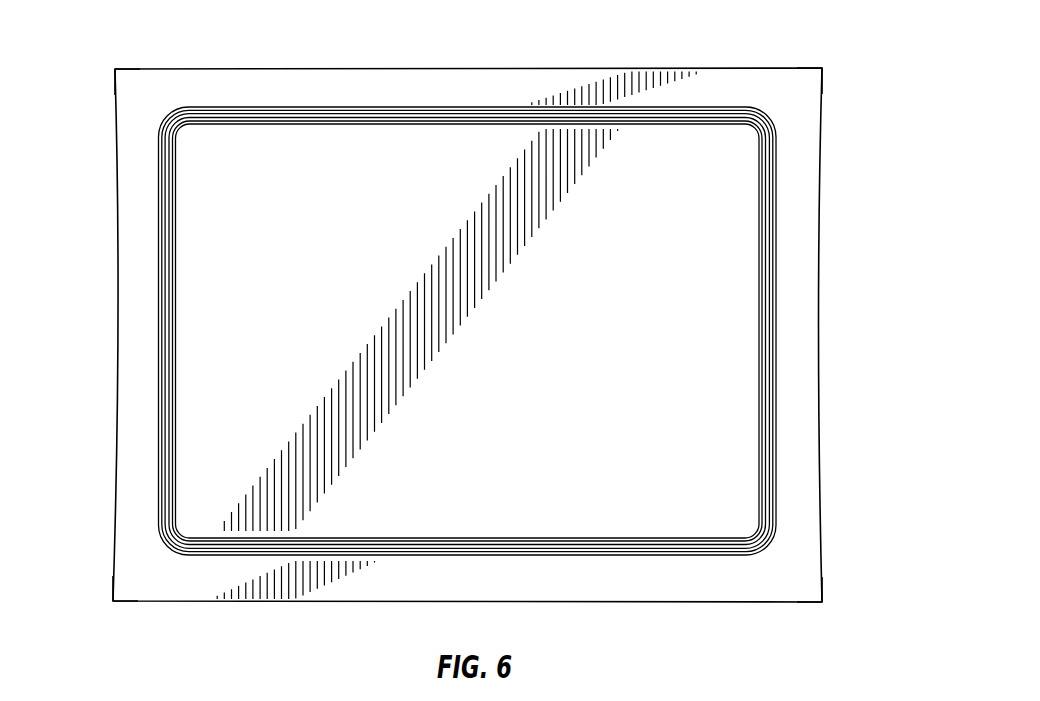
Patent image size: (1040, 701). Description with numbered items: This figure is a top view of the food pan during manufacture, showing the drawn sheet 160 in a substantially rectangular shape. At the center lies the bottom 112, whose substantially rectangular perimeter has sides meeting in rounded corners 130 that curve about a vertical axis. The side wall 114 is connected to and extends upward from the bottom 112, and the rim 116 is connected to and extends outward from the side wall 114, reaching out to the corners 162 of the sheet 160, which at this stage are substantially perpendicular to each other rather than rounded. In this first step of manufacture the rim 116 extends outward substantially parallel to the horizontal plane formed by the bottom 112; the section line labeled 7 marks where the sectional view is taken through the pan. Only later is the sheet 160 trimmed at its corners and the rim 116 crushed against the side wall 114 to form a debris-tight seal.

The drawn sheet 160 is at (855, 466).
The corners 162 is at (116, 70).
The rim 116 is at (795, 184).
The side wall 114 is at (758, 297).
The rounded corners 130 is at (752, 527).
The bottom 112 is at (561, 410).
The section line 7- 7 is at (908, 270).